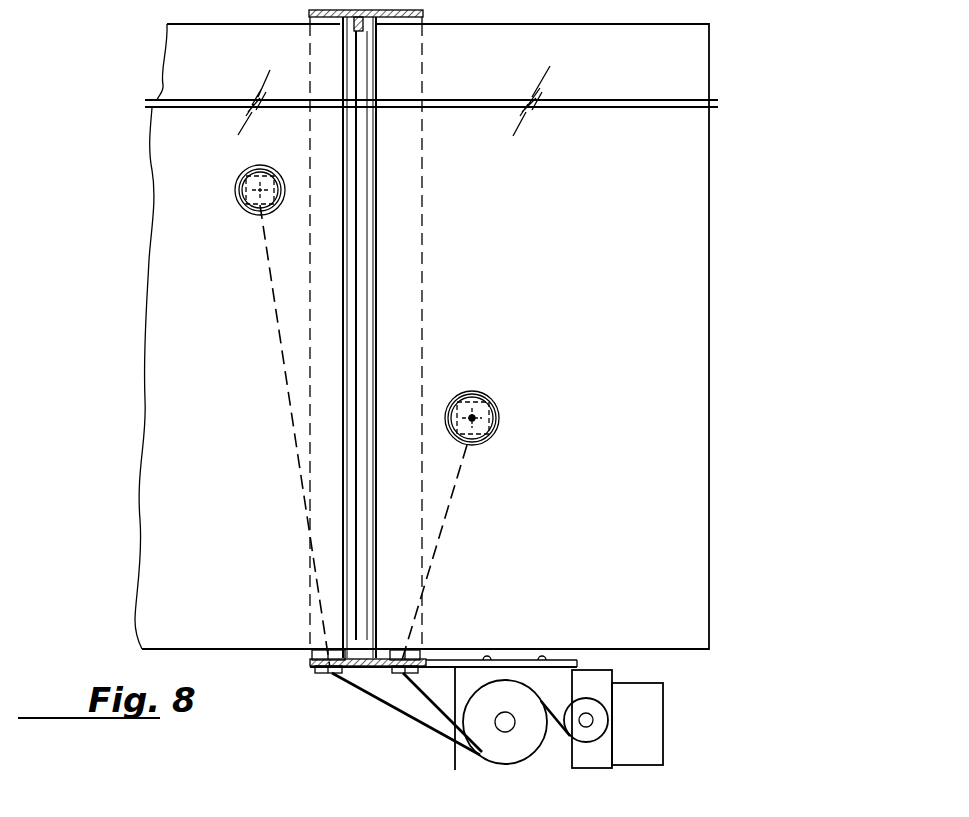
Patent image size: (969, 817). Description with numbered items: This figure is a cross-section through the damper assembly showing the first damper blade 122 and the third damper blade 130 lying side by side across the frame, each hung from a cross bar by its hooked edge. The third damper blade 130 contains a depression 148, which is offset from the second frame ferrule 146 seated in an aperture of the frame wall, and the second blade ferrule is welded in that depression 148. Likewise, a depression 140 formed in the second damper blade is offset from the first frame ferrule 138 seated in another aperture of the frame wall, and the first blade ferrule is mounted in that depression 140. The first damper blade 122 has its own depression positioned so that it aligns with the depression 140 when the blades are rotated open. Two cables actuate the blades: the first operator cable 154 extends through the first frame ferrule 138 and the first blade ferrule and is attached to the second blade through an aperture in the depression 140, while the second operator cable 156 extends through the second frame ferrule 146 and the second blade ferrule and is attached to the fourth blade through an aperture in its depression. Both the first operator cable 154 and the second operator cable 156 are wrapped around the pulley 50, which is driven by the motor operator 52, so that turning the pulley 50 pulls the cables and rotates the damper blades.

The first damper blade 122 is at (677, 247).
The third damper blade 130 is at (176, 420).
The depression 148 is at (243, 190).
The depression 140 is at (488, 417).
The second frame ferrule 146 is at (317, 675).
The first frame ferrule 138 is at (400, 675).
The second operator cable 156 is at (373, 700).
The first operator cable 154 is at (425, 695).
The pulley 50 is at (487, 738).
The motor operator 52 is at (656, 723).